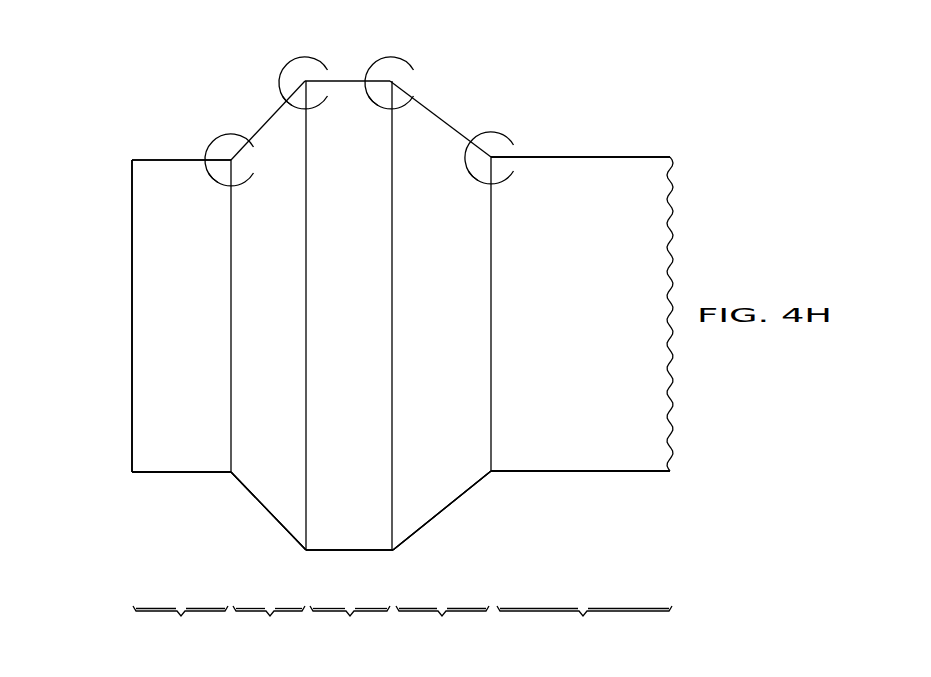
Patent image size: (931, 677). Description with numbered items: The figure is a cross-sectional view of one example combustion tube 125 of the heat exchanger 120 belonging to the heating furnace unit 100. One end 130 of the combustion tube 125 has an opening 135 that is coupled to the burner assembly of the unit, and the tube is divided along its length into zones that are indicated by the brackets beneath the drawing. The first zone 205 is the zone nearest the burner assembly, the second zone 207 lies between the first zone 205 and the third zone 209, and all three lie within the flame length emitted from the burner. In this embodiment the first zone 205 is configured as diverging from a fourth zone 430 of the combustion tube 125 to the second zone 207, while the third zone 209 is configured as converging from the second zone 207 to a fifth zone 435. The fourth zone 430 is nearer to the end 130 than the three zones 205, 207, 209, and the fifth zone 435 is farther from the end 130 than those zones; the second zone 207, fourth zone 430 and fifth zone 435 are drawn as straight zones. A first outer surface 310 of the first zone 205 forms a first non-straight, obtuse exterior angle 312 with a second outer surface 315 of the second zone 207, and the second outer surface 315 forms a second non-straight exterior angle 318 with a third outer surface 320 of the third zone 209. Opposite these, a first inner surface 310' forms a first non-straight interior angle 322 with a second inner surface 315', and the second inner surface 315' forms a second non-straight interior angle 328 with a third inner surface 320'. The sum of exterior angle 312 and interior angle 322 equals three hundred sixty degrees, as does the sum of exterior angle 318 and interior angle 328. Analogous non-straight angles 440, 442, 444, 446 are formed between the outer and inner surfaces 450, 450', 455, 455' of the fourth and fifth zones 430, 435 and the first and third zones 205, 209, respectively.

The heating furnace unit 100 is at (115, 75).
The heat exchanger 120 is at (660, 139).
The combustion tube 125 is at (577, 156).
The end of the combustion tube 130 is at (131, 472).
The opening 135 is at (130, 284).
The first zone 205 is at (268, 362).
The second zone 207 is at (349, 362).
The third zone 209 is at (440, 362).
The first outer surface 310 is at (256, 511).
The first inner surface 310' is at (268, 496).
The first non-straight angle 312 is at (300, 59).
The second outer surface 315 is at (340, 575).
The second inner surface 315' is at (349, 521).
The second non-straight angle 318 is at (398, 59).
The third outer surface 320 is at (444, 516).
The third inner surface 320' is at (442, 498).
The first non-straight interior angle 322 is at (318, 108).
The second non-straight interior angle 328 is at (377, 107).
The fourth zone 430 is at (181, 402).
The fifth zone 435 is at (581, 400).
The non-straight angle 440 is at (229, 134).
The non-straight angle 442 is at (493, 134).
The non-straight angle 444 is at (220, 184).
The non-straight angle 446 is at (505, 183).
The outer surface of the fourth zone 450 is at (181, 501).
The inner surface of the fourth zone 450' is at (181, 442).
The outer surface of the fifth zone 455 is at (580, 499).
The inner surface of the fifth zone 455' is at (580, 441).